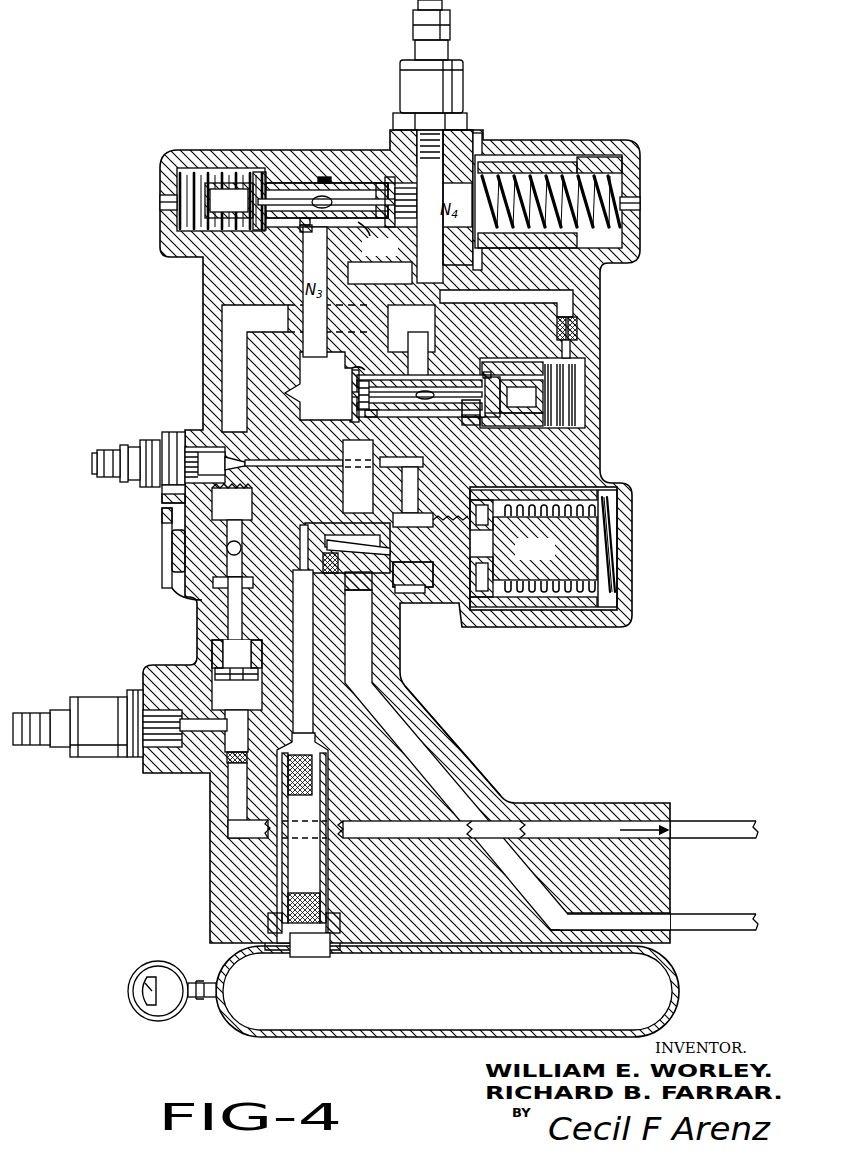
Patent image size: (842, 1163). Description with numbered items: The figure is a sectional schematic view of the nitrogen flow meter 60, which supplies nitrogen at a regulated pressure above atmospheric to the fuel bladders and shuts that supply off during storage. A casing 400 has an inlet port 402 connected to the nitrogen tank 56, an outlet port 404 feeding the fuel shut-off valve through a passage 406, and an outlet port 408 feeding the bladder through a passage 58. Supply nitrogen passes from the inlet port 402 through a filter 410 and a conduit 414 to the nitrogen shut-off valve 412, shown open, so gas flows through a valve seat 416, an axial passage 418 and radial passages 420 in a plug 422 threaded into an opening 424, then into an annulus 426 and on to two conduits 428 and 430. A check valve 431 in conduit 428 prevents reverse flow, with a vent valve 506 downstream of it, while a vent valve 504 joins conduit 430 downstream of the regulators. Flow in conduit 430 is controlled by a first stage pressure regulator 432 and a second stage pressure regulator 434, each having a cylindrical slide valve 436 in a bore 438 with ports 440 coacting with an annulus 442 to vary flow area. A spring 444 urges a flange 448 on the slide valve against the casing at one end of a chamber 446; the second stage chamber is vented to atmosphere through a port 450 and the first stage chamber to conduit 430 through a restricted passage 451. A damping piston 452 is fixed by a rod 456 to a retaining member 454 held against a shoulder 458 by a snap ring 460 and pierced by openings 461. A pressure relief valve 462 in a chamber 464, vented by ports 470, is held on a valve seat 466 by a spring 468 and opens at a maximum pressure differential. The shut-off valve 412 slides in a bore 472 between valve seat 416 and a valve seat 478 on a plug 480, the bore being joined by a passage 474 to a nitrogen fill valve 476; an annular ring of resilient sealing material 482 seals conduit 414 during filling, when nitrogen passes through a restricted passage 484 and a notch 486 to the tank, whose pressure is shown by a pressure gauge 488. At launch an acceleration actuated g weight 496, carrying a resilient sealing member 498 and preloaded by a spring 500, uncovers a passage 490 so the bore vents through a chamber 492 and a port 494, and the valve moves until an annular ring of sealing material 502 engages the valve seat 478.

The nitrogen flow meter 60 is at (250, 127).
The nitrogen tank 56 is at (440, 1035).
The passage 58 is at (707, 918).
The casing 400 is at (470, 762).
The inlet port 402 is at (307, 945).
The outlet port 404 is at (663, 827).
The passage 406 is at (747, 838).
The outlet port 408 is at (680, 940).
The filter 410 is at (283, 886).
The nitrogen shut-off valve 412 is at (337, 523).
The conduit 414 is at (235, 620).
The valve seat 416 is at (293, 506).
The axial passage 418 is at (242, 548).
The radial passages 420 is at (232, 562).
The plug 422 is at (163, 562).
The opening 424 is at (180, 497).
The annulus 426 is at (180, 595).
The conduit 428 is at (228, 796).
The conduit 430 is at (227, 393).
The check valve 431 is at (253, 682).
The first stage pressure regulator 432 is at (468, 420).
The second stage pressure regulator 434 is at (307, 180).
The cylindrical slide valve 436 is at (352, 188).
The bore 438 is at (338, 190).
The ports 440 is at (325, 177).
The annulus 442 is at (348, 262).
The spring 444 is at (180, 182).
The chamber 446 is at (192, 153).
The flange 448 is at (267, 173).
The port 450 is at (160, 203).
The restricted passage 451 is at (573, 302).
The damping piston 452 is at (300, 225).
The retaining member 454 is at (403, 212).
The rod 456 is at (306, 234).
The shoulder 458 is at (365, 232).
The snap ring 460 is at (397, 187).
The openings 461 is at (398, 175).
The pressure relief valve 462 is at (547, 157).
The chamber 464 is at (600, 160).
The valve seat 466 is at (483, 163).
The spring 468 is at (637, 244).
The ports 470 is at (478, 133).
The bore 472 is at (402, 593).
The passage 474 is at (423, 462).
The nitrogen fill valve 476 is at (107, 450).
The valve seat 478 is at (407, 575).
The plug 480 is at (480, 605).
The annular ring of resilient sealing material 482 is at (245, 588).
The restricted passage 484 is at (350, 523).
The notch 486 is at (313, 577).
The pressure gauge 488 is at (137, 965).
The passage 490 is at (458, 625).
The chamber 492 is at (550, 590).
The port 494 is at (632, 523).
The g weight 496 is at (582, 547).
The resilient sealing member 498 is at (473, 543).
The spring 500 is at (605, 508).
The annular ring of sealing material 502 is at (370, 590).
The vent valve 504 is at (463, 77).
The vent valve 506 is at (100, 700).